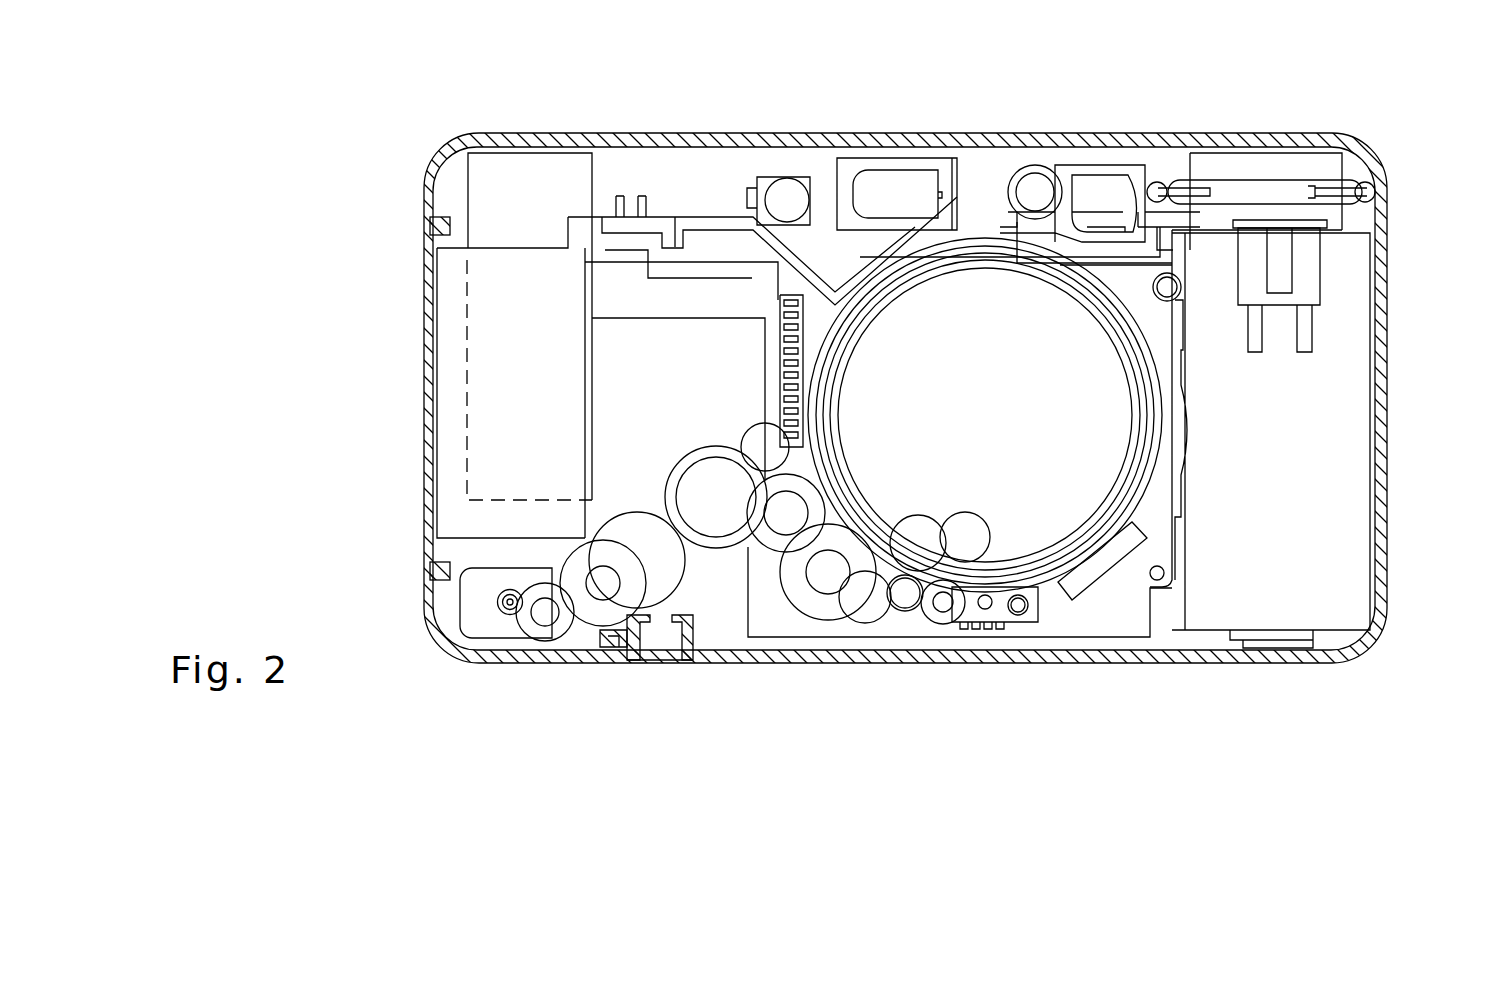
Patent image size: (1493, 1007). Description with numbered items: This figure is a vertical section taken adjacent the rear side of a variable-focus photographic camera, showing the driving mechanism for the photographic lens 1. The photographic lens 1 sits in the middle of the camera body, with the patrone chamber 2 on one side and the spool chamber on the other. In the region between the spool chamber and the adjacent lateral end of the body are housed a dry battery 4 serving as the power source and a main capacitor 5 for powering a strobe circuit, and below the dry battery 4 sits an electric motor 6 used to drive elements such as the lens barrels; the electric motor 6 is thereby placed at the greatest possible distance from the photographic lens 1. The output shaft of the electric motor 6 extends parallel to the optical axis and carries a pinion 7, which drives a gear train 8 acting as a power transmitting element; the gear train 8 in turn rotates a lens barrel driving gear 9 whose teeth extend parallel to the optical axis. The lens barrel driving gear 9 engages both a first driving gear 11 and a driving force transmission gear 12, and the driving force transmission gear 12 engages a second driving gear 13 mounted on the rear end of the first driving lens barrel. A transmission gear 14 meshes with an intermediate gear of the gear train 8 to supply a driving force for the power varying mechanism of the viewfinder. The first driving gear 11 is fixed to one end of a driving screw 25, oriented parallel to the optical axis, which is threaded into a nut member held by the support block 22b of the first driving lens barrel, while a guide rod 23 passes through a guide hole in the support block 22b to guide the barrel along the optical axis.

The photographic lens 1 is at (993, 430).
The patrone chamber 2 is at (1325, 548).
The dry battery 4 is at (456, 414).
The main capacitor 5 is at (522, 172).
The electric motor 6 is at (477, 622).
The pinion 7 is at (502, 618).
The gear train 8 is at (723, 610).
The lens barrel driving gear 9 is at (907, 615).
The first driving gear 11 is at (953, 615).
The driving force transmission gear 12 is at (918, 533).
The second driving gear 13 is at (982, 533).
The transmission gear 14 is at (752, 441).
The support block 22b is at (1040, 612).
The guide rod 23 is at (1022, 607).
The driving screw 25 is at (940, 618).